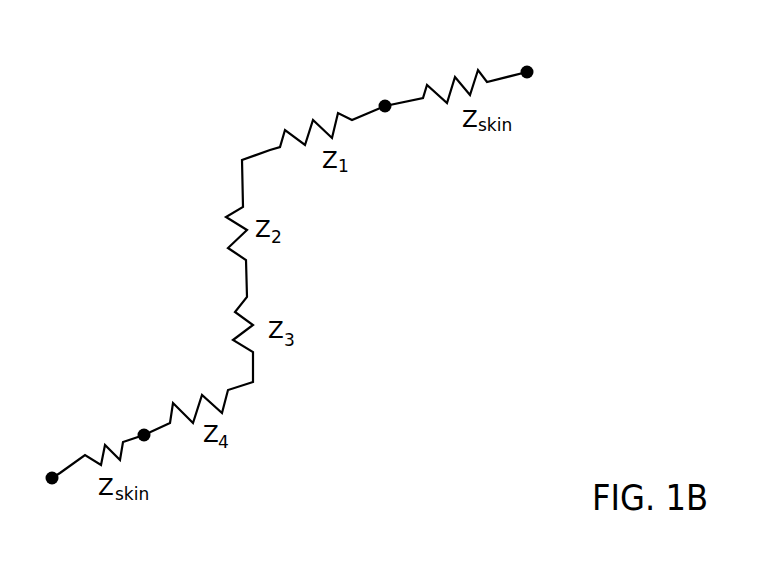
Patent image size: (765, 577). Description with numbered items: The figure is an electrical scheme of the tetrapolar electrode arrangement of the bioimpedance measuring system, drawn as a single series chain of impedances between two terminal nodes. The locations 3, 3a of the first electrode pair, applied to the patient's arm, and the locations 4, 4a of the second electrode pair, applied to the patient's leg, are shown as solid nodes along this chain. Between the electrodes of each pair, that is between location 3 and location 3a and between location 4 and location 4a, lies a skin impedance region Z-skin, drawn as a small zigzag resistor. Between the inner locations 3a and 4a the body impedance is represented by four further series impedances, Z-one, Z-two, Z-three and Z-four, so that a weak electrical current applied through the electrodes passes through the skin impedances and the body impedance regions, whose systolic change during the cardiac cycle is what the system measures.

The electrode location 3 is at (530, 54).
The electrode location 3a is at (374, 89).
The electrode location 4 is at (43, 469).
The electrode location 4a is at (131, 419).